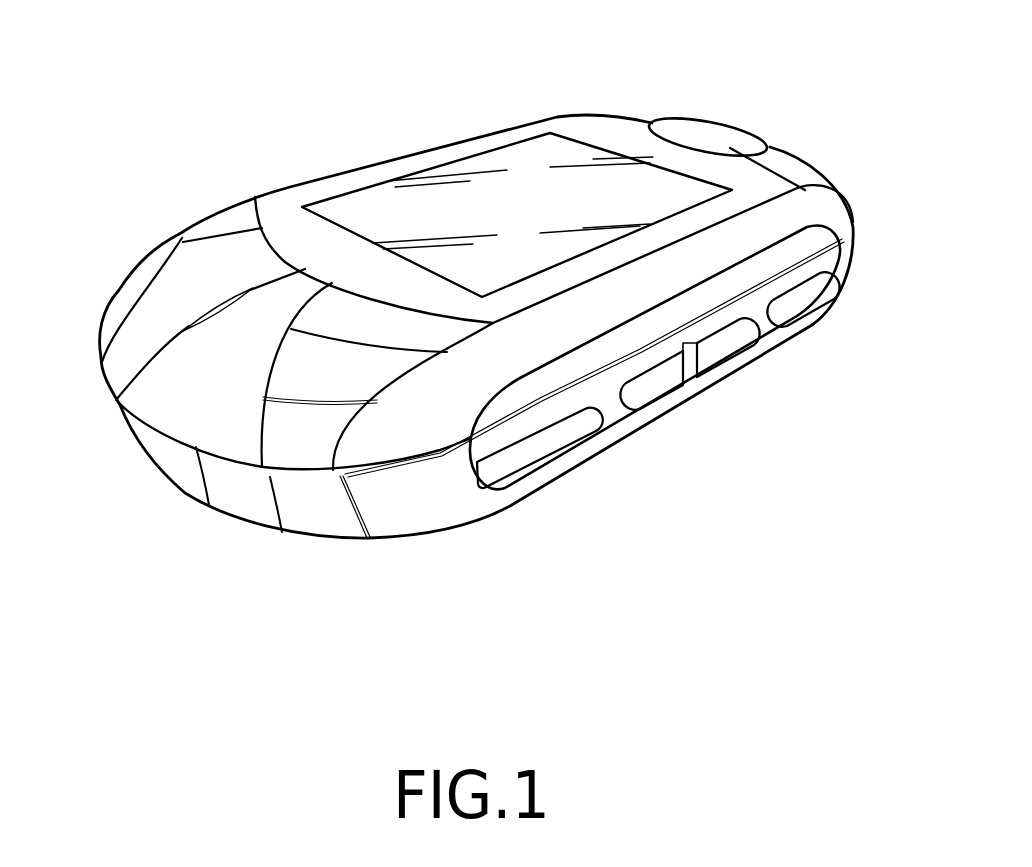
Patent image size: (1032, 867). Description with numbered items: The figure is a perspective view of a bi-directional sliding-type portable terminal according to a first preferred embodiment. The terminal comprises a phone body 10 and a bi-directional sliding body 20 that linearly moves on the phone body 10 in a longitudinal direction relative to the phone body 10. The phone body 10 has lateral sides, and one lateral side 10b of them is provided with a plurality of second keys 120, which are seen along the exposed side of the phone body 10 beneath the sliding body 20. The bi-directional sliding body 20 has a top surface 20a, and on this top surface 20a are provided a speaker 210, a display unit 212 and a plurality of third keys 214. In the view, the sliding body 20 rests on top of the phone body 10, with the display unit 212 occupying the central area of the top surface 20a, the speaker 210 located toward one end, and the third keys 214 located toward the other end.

The phone body 10 is at (258, 517).
The lateral side 10b is at (557, 449).
The bi-directional sliding body 20 is at (119, 299).
The top surface 20a is at (287, 217).
The second keys 120 is at (660, 392).
The speaker 210 is at (217, 303).
The display unit 212 is at (510, 158).
The third keys 214 is at (712, 132).